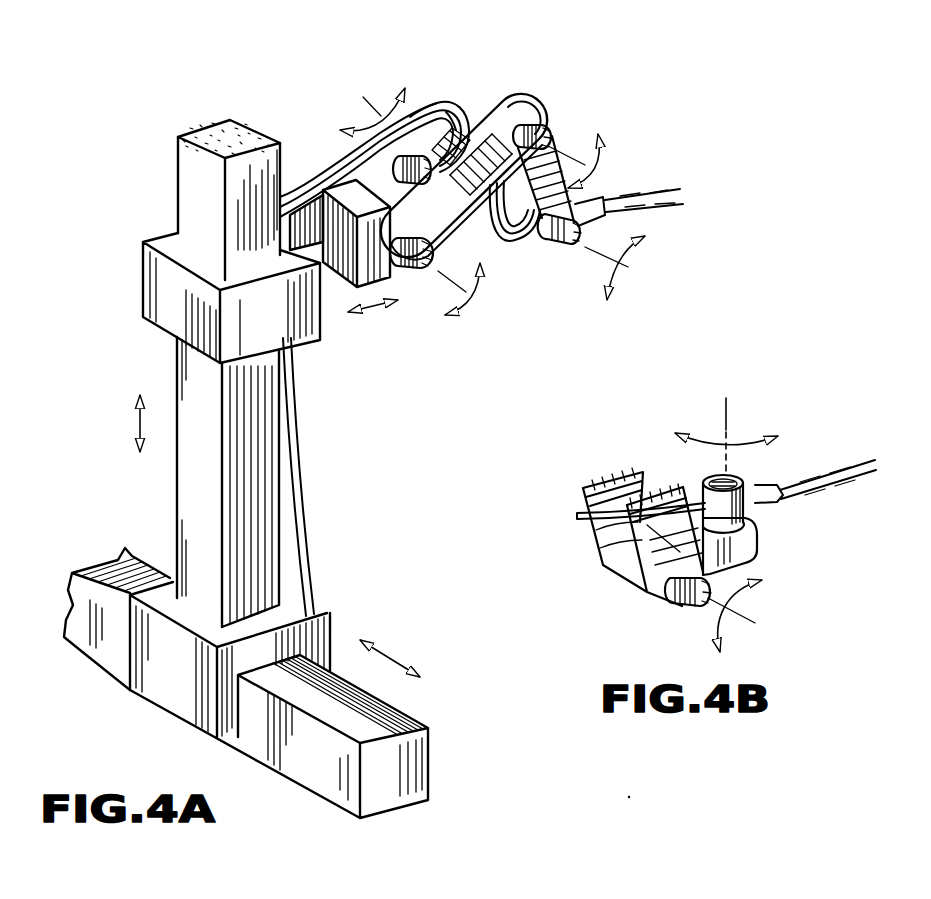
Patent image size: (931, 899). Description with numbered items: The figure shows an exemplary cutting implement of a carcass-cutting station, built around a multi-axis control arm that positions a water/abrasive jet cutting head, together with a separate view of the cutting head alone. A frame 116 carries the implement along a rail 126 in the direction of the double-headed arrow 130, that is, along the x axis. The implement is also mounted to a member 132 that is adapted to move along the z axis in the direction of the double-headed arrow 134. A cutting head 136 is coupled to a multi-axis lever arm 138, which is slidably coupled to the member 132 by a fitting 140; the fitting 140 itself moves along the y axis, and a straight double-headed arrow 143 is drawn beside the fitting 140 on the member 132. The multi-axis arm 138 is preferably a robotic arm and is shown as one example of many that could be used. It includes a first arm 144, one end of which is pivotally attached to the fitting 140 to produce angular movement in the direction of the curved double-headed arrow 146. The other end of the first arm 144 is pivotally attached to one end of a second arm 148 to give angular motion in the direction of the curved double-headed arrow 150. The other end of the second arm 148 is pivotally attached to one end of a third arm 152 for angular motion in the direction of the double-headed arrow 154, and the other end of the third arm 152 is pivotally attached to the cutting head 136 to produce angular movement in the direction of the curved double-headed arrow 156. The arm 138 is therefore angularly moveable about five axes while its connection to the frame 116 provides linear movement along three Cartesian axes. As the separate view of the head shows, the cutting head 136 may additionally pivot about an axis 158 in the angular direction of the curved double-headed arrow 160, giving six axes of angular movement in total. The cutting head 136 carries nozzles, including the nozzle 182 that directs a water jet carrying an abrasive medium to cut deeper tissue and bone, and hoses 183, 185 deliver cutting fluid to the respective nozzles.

In FIG. 4A, the frame 116 is at (188, 510).
In FIG. 4A, the rail 126 is at (334, 798).
In FIG. 4A, the double-headed arrow 130 is at (393, 652).
In FIG. 4A, the member 132 is at (150, 290).
In FIG. 4A, the double-headed arrow 134 is at (140, 430).
In FIG. 4A, the cutting head 136 is at (584, 240).
In FIG. 4B, the cutting head 136 is at (699, 476).
In FIG. 4A, the multi-axis lever arm 138 is at (485, 88).
In FIG. 4A, the fitting 140 is at (337, 183).
In FIG. 4A, the carriage slide arrow 143 is at (373, 318).
In FIG. 4A, the first arm 144 is at (440, 264).
In FIG. 4A, the curved double-headed arrow 146 is at (473, 310).
In FIG. 4A, the second arm 148 is at (490, 213).
In FIG. 4A, the curved double-headed arrow 150 is at (388, 104).
In FIG. 4A, the third arm 152 is at (555, 155).
In FIG. 4B, the third arm 152 is at (641, 598).
In FIG. 4A, the double-headed arrow 154 is at (583, 165).
In FIG. 4A, the curved double-headed arrow 156 is at (622, 283).
In FIG. 4B, the curved double-headed arrow 156 is at (747, 637).
In FIG. 4B, the axis 158 is at (730, 412).
In FIG. 4B, the curved double-headed arrow 160 is at (760, 433).
In FIG. 4A, the nozzle 182 is at (612, 212).
In FIG. 4A, the hose 183 is at (436, 100).
In FIG. 4A, the hose 185 is at (453, 105).